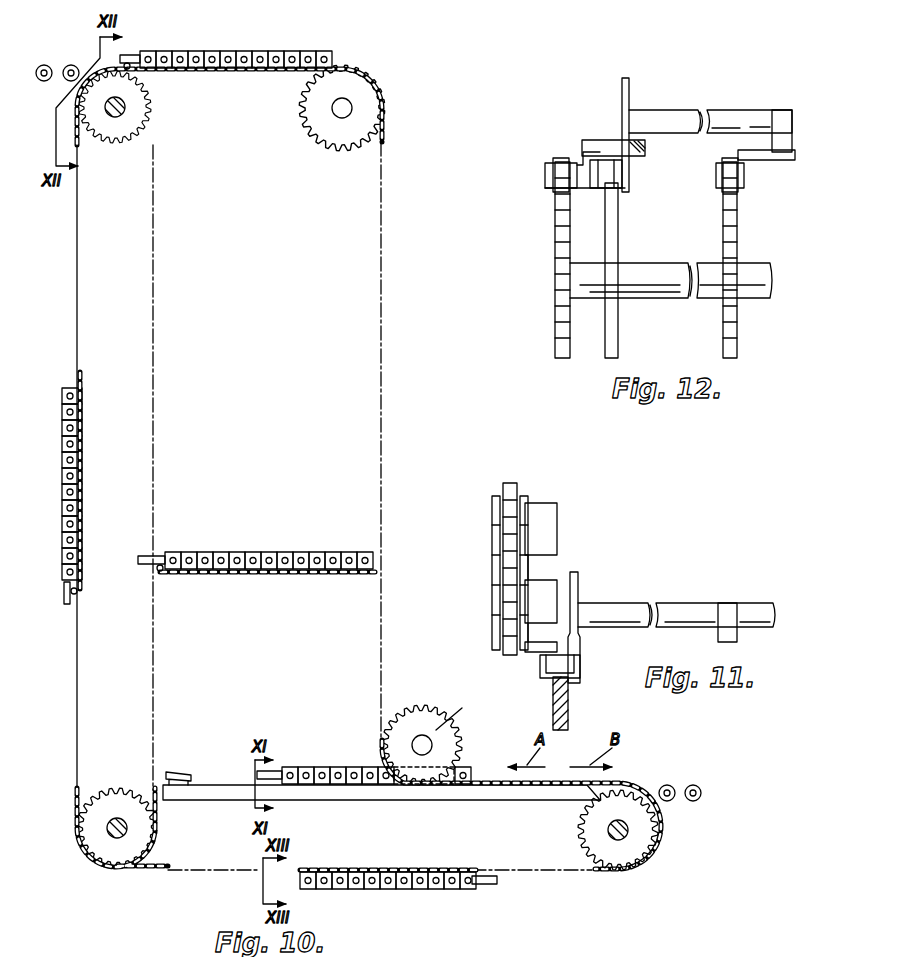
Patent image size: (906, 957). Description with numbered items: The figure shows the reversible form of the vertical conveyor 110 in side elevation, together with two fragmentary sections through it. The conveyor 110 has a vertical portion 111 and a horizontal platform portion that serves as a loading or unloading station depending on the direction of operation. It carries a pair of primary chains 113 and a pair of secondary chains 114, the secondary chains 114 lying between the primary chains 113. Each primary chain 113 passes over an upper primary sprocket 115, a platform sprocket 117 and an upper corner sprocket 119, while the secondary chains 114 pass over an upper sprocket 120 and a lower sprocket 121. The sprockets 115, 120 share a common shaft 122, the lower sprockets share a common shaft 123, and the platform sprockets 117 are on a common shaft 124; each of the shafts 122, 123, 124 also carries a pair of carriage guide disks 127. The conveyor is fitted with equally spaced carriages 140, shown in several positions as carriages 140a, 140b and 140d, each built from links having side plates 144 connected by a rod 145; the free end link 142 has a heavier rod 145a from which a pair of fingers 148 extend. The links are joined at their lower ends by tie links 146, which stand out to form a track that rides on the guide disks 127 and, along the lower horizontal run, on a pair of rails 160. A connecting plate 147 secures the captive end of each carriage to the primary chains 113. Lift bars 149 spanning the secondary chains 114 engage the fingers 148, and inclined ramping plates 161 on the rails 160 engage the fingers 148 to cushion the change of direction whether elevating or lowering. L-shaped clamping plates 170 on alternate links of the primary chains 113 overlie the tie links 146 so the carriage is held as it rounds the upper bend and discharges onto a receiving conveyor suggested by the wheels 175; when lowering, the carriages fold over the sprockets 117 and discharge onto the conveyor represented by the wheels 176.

In FIG. 10, the vertical conveyor 110 is at (400, 360).
In FIG. 10, the vertical portion 111 is at (387, 521).
In FIG. 10, the primary chains 113 is at (384, 236).
In FIG. 12, the primary chains 113 is at (540, 163).
In FIG. 11, the primary chains 113 is at (494, 592).
In FIG. 10, the secondary chains 114 is at (156, 287).
In FIG. 12, the upper primary sprocket 115 is at (560, 222).
In FIG. 10, the platform sprocket 117 is at (642, 845).
In FIG. 10, the upper corner sprocket 119 is at (333, 138).
In FIG. 10, the upper sprocket 120 is at (116, 143).
In FIG. 12, the upper sprocket 120 is at (738, 230).
In FIG. 10, the lower sprocket 121 is at (118, 800).
In FIG. 10, the common shaft 122 is at (124, 106).
In FIG. 12, the common shaft 122 is at (632, 282).
In FIG. 10, the common shaft 123 is at (105, 838).
In FIG. 10, the common shaft 124 is at (606, 832).
In FIG. 12, the carriage guide disks 127 is at (615, 228).
In FIG. 10, the carriages 140 is at (331, 770).
In FIG. 12, the carriages 140 is at (644, 100).
In FIG. 11, the carriages 140 is at (626, 600).
In FIG. 10, the carrier 140a is at (250, 552).
In FIG. 10, the carrier 140b is at (302, 50).
In FIG. 10, the carrier 140d is at (368, 890).
In FIG. 10, the free end link 142 is at (170, 554).
In FIG. 12, the side plates 144 is at (622, 86).
In FIG. 11, the side plates 144 is at (579, 582).
In FIG. 11, the rod 145 is at (680, 608).
In FIG. 12, the rod 145a is at (667, 110).
In FIG. 12, the tie links 146 is at (601, 190).
In FIG. 11, the tie links 146 is at (547, 682).
In FIG. 12, the mounting block 147 is at (598, 140).
In FIG. 10, the fingers 148 is at (138, 56).
In FIG. 12, the fingers 148 is at (774, 108).
In FIG. 11, the fingers 148 is at (728, 618).
In FIG. 10, the lift bars 149 is at (127, 62).
In FIG. 12, the lift bars 149 is at (738, 154).
In FIG. 10, the rails 160 is at (500, 796).
In FIG. 11, the rails 160 is at (570, 703).
In FIG. 10, the ramping plates 161 is at (182, 772).
In FIG. 10, the clamping plates 170 is at (400, 872).
In FIG. 12, the clamping plates 170 is at (580, 152).
In FIG. 11, the clamping plates 170 is at (545, 526).
In FIG. 10, the wheels 175 is at (70, 64).
In FIG. 10, the wheels 176 is at (693, 784).